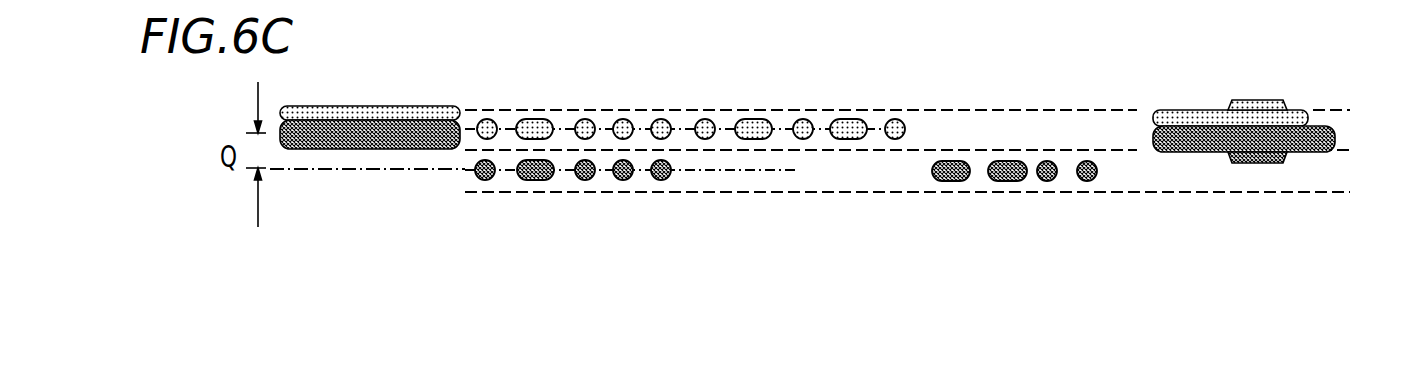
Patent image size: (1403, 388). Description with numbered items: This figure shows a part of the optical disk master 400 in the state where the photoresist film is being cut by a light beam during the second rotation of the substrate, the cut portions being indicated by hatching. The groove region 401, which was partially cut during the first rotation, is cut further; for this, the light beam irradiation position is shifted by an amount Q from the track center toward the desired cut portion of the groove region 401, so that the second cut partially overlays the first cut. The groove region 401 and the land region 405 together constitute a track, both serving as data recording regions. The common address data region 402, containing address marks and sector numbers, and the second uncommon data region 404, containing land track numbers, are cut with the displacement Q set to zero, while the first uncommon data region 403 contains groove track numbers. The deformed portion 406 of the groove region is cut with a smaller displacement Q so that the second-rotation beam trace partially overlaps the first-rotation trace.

The optical disk master 400 is at (906, 0).
The groove region 401 is at (375, 150).
The common address data region 402 is at (673, 102).
The first uncommon data region 403 is at (910, 102).
The second uncommon data region 404 is at (1103, 205).
The land region 405 is at (1233, 180).
The deformed portion of the groove region 406 is at (1273, 108).